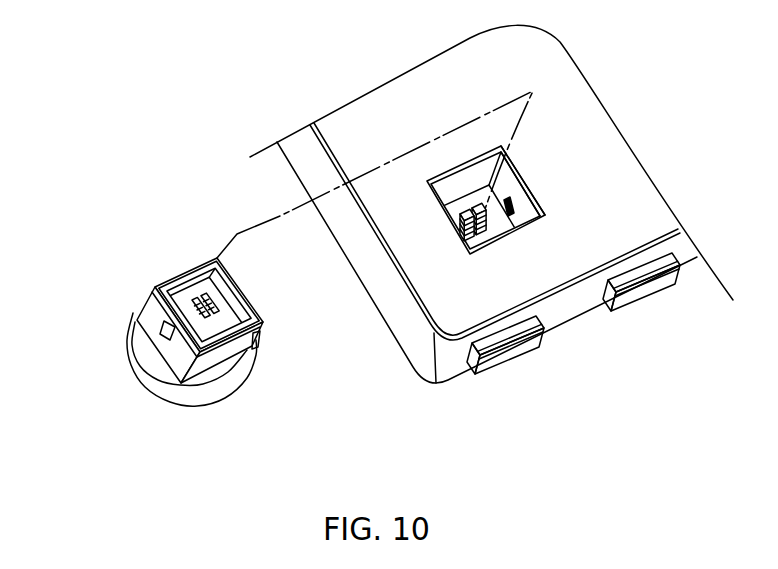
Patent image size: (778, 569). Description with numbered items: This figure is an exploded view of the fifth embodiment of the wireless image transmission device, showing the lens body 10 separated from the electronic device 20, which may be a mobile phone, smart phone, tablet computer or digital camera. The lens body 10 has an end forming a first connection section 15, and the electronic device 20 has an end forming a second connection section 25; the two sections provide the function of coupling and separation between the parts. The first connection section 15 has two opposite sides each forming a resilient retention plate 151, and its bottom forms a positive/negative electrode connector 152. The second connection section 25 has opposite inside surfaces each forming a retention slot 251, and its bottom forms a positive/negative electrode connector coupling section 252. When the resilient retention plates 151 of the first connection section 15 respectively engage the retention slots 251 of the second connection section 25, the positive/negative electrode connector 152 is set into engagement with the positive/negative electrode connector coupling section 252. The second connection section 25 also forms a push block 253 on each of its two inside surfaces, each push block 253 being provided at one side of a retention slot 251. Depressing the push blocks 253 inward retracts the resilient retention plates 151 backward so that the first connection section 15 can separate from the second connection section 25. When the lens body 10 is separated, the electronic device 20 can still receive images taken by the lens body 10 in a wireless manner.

The lens body 10 is at (148, 320).
The first connection section 15 is at (148, 285).
The resilient retention plate 151 is at (158, 330).
The positive/negative electrode connector 152 is at (200, 303).
The electronic device 20 is at (372, 120).
The second connection section 25 is at (579, 155).
The retention slot 251 is at (512, 201).
The positive/negative electrode connector coupling section 252 is at (484, 210).
The push block 253 is at (514, 216).